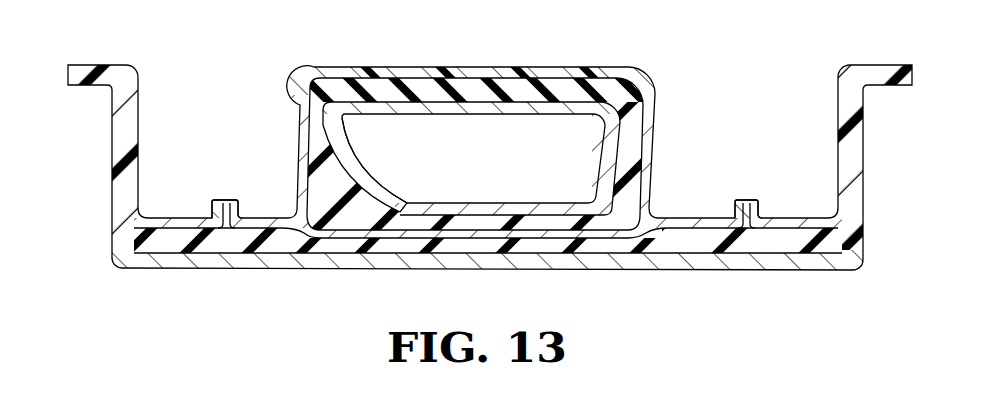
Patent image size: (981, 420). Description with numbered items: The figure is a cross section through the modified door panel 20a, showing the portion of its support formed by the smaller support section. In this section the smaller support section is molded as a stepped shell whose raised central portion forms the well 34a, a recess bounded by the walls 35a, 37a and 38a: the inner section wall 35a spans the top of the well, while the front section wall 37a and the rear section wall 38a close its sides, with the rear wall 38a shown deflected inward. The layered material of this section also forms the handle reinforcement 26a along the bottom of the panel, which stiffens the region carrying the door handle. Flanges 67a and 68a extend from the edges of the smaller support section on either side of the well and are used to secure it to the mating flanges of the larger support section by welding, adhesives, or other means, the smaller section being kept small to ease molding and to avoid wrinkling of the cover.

The door panel 20a is at (712, 57).
The handle reinforcement 26a is at (573, 270).
The well 34a is at (503, 173).
The inner section wall 35a is at (442, 112).
The front section wall 37a is at (592, 180).
The rear section wall 38a is at (357, 168).
The flange 67a is at (238, 205).
The flange 68a is at (735, 203).